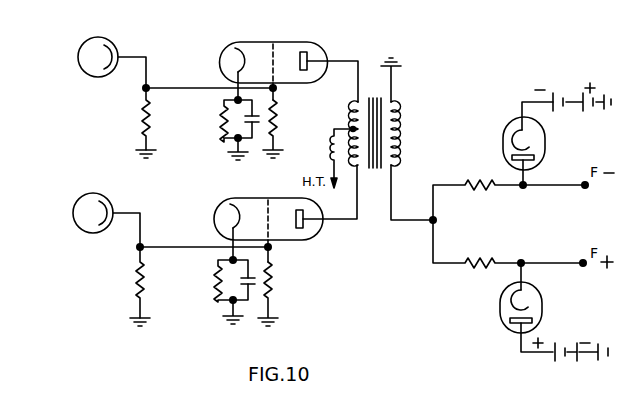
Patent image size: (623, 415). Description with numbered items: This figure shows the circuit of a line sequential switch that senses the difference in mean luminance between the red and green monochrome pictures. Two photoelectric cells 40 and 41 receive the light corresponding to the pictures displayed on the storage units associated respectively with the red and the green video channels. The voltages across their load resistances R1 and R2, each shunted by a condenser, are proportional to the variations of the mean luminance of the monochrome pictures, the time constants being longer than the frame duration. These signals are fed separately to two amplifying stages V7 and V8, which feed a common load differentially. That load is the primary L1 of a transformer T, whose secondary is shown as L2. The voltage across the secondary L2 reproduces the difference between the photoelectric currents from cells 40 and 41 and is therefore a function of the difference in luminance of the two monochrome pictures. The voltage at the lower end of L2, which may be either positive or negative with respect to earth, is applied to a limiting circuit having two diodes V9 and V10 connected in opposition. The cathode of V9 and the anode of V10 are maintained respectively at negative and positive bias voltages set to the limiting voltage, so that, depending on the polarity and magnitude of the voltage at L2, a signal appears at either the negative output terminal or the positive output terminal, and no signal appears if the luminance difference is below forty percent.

The photoelectric cell 40 is at (111, 42).
The photoelectric cell 41 is at (106, 199).
The load resistance R1 is at (155, 123).
The load resistance R2 is at (150, 286).
The amplifying stage V7 is at (273, 50).
The amplifying stage V8 is at (268, 207).
The diode V9 is at (507, 143).
The diode V10 is at (500, 307).
The transformer primary L1 is at (333, 133).
The transformer secondary L2 is at (399, 134).
The transformer T is at (372, 167).